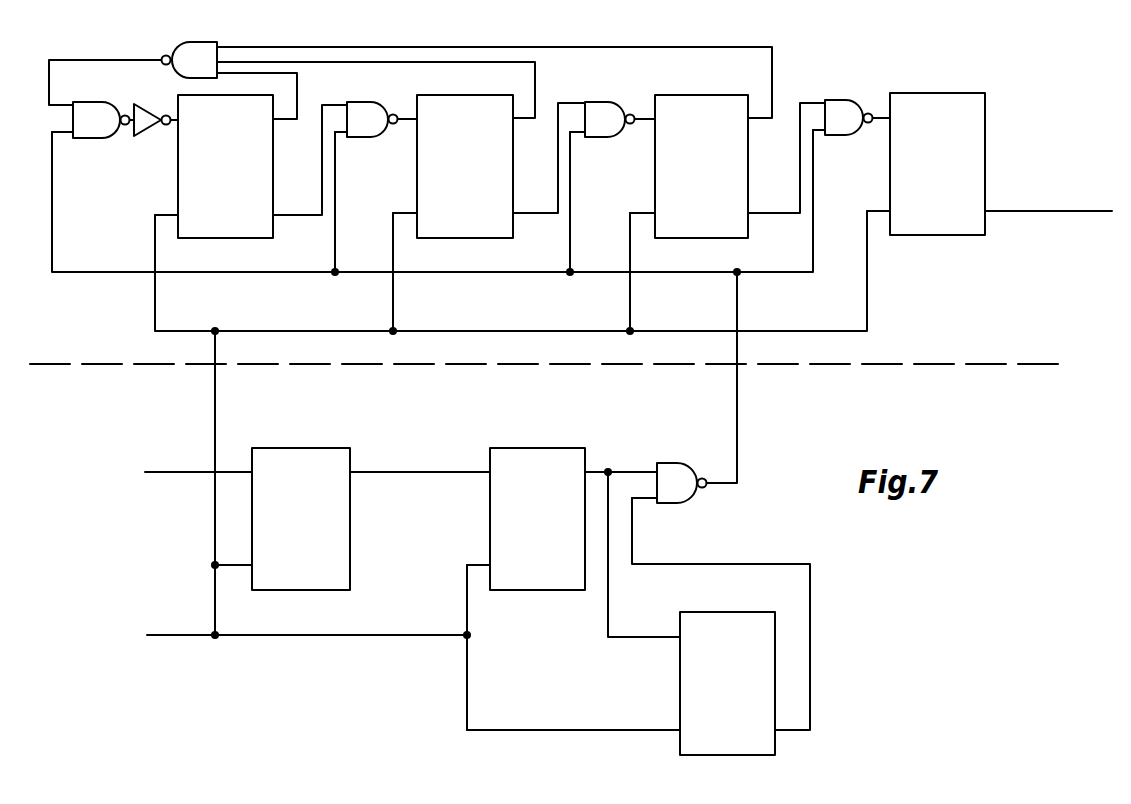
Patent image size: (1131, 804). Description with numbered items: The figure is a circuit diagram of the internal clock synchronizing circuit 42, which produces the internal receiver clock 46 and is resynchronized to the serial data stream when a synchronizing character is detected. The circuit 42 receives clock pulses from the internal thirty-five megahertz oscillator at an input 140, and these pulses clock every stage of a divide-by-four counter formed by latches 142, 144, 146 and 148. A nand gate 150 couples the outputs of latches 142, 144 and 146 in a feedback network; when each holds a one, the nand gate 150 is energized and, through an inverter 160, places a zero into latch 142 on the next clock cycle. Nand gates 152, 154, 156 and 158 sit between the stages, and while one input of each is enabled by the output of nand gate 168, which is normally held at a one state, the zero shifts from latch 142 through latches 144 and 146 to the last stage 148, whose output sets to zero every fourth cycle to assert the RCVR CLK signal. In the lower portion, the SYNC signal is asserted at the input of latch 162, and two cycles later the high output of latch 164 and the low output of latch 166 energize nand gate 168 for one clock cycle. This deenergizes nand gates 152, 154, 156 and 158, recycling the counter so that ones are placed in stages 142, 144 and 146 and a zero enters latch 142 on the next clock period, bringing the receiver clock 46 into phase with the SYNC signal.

The input 140 is at (189, 640).
The latch 142 is at (178, 172).
The latch 144 is at (417, 178).
The latch 146 is at (655, 176).
The latch 148 is at (952, 93).
The nand gate 150 is at (187, 42).
The nand gate 152 is at (90, 102).
The nand gate 154 is at (372, 100).
The nand gate 156 is at (605, 100).
The nand gate 158 is at (848, 100).
The inverter 160 is at (147, 135).
The latch 162 is at (298, 448).
The latch 164 is at (533, 448).
The latch 166 is at (680, 683).
The nand gate 168 is at (684, 463).
The internal receiver clock 46 is at (993, 309).
The internal clock synchronizing circuit 42 is at (1002, 441).